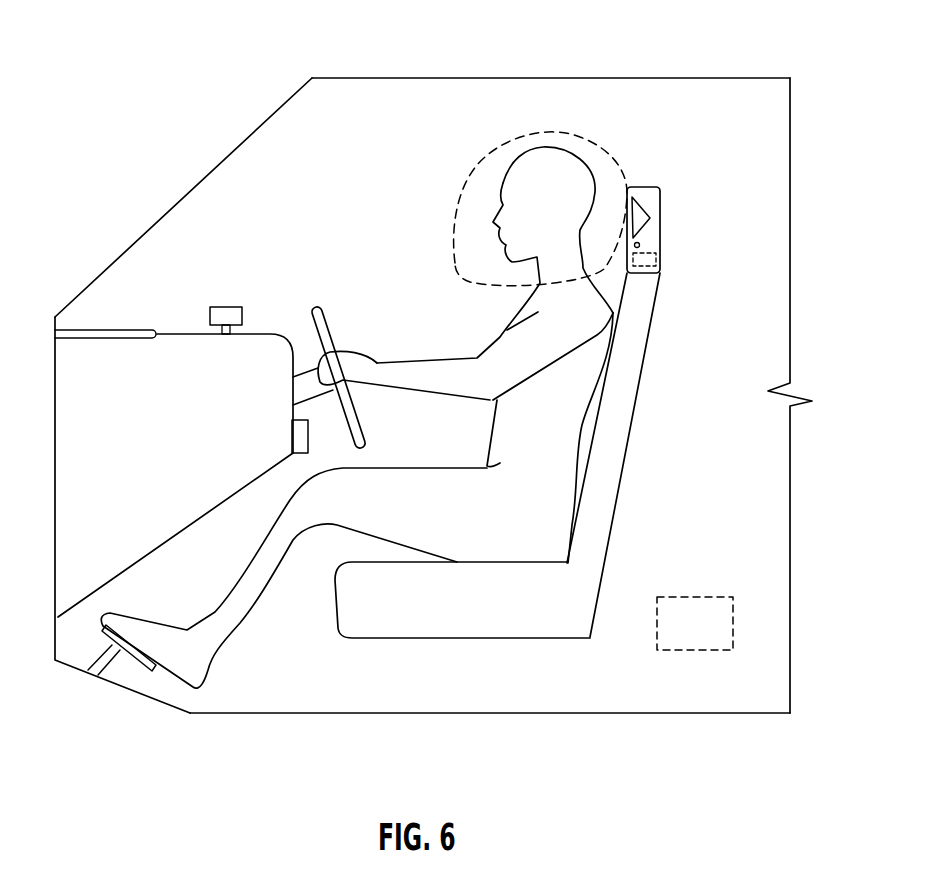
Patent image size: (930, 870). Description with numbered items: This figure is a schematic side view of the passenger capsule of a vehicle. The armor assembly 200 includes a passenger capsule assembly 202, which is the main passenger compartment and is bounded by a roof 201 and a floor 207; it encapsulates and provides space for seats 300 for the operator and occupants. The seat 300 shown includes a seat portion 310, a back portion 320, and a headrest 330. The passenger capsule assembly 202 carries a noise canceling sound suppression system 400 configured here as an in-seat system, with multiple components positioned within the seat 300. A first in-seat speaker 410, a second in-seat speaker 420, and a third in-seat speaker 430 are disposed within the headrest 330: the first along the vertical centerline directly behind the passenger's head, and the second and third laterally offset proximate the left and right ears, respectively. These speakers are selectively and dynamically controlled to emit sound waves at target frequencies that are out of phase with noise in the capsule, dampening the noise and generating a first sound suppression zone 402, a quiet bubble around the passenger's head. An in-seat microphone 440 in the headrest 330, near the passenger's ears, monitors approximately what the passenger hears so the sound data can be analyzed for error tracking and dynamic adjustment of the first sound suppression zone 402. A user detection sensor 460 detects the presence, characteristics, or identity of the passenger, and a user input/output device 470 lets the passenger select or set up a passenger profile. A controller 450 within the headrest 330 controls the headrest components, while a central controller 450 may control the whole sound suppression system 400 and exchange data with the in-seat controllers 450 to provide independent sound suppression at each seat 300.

The armor assembly 200 is at (421, 380).
The roof 201 is at (551, 43).
The passenger capsule assembly 202 is at (171, 197).
The floor 207 is at (490, 732).
The seat 300 is at (553, 357).
The seat portion 310 is at (483, 624).
The back portion 320 is at (654, 455).
The headrest 330 is at (623, 187).
The sound suppression system 400 is at (684, 208).
The first sound suppression zone 402 is at (521, 202).
The first in-seat speaker 410 is at (702, 138).
The second in-seat speaker 420 is at (702, 138).
The third in-seat speaker 430 is at (702, 138).
The in-seat microphone 440 is at (686, 229).
The controller 450 is at (687, 451).
The user detection sensor 460 is at (237, 286).
The user input/output device 470 is at (261, 428).